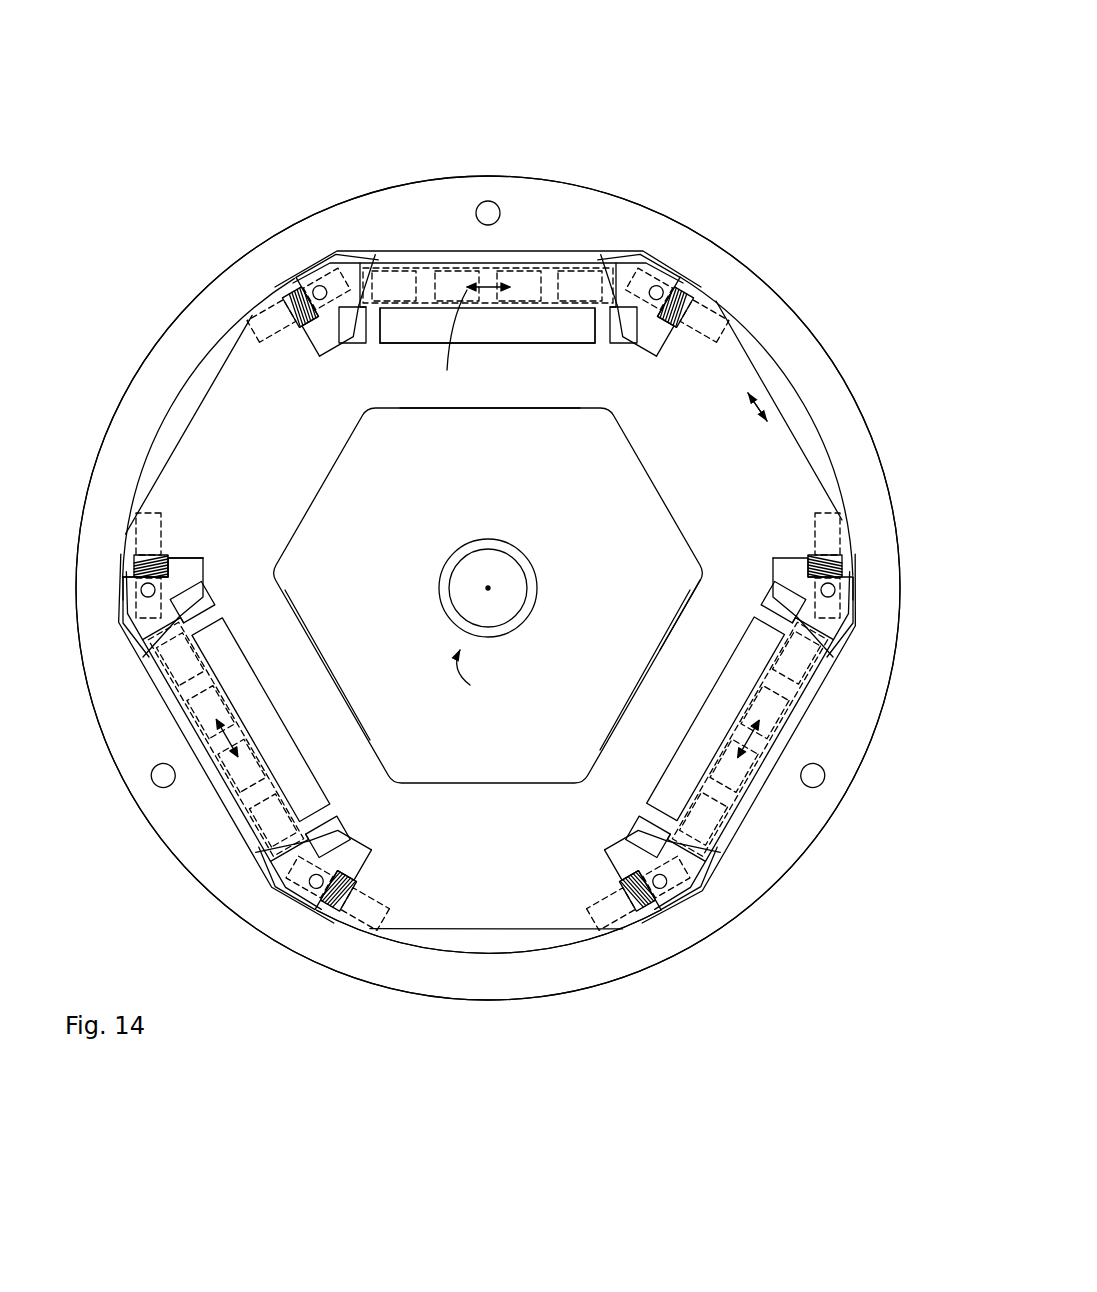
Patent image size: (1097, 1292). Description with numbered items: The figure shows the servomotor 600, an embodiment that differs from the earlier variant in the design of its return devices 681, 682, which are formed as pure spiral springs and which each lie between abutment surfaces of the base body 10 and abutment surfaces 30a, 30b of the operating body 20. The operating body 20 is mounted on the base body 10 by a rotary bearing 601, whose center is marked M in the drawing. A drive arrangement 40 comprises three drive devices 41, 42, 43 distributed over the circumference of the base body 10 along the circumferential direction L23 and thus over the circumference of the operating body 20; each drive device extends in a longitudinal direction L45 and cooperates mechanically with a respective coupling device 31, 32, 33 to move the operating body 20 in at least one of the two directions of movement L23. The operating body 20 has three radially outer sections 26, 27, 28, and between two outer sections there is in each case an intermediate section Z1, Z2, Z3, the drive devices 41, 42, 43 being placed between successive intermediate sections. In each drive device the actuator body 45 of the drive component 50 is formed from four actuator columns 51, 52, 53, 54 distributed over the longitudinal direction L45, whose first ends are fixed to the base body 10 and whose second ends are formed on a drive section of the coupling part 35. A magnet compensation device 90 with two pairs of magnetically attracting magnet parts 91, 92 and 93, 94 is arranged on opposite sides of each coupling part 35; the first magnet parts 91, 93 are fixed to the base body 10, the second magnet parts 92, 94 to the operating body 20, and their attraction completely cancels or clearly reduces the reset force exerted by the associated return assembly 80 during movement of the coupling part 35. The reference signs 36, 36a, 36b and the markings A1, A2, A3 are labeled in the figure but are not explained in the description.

The base body 10 is at (710, 990).
The operating body 20 is at (580, 957).
The radially outer section 26 is at (300, 627).
The radially outer section 27 is at (496, 411).
The radially outer section 28 is at (660, 730).
The abutment surface 30a is at (690, 302).
The abutment surface 30b is at (285, 297).
The coupling device 31 is at (265, 657).
The coupling device 32 is at (430, 338).
The coupling device 33 is at (700, 652).
The coupling part 35 is at (490, 305).
The stop 36 is at (583, 328).
The first stop 36a is at (383, 320).
The second stop 36b is at (593, 320).
The drive arrangement 40 is at (305, 128).
The first drive device 41 is at (170, 780).
The second drive device 42 is at (478, 152).
The third drive device 43 is at (820, 680).
The actuator body 45 is at (505, 305).
The drive component 50 is at (272, 268).
The actuator column 51 is at (362, 262).
The actuator column 52 is at (450, 283).
The actuator column 53 is at (520, 283).
The actuator column 54 is at (590, 290).
The return assembly 80 is at (725, 570).
The magnet compensation device 90 is at (263, 342).
The first magnet part 91 is at (815, 520).
The second magnet part 92 is at (343, 344).
The first magnet part 93 is at (633, 310).
The second magnet part 94 is at (712, 332).
The servomotor 600 is at (795, 110).
The rotary bearing 601 is at (481, 678).
The return device 681 is at (310, 344).
The return device 682 is at (668, 318).
The first module axis A1 is at (170, 690).
The second module axis A2 is at (403, 262).
The third module axis A3 is at (745, 808).
The circumferential direction L23 is at (762, 398).
The longitudinal direction L45 is at (680, 720).
The center point M is at (500, 580).
The first intermediate section Z1 is at (170, 465).
The second intermediate section Z2 is at (800, 460).
The third intermediate section Z3 is at (446, 933).